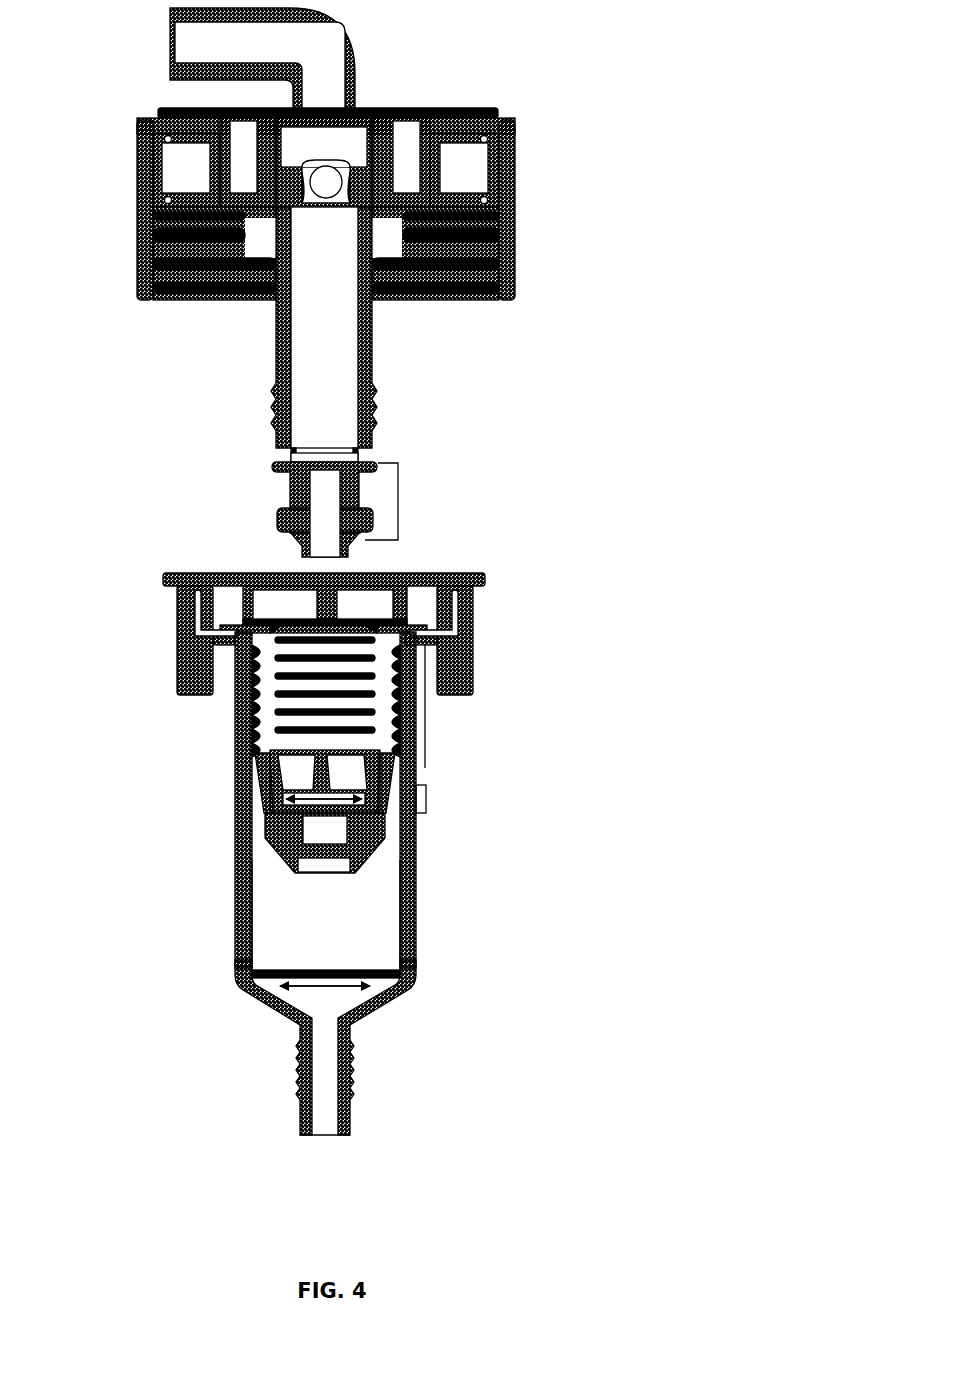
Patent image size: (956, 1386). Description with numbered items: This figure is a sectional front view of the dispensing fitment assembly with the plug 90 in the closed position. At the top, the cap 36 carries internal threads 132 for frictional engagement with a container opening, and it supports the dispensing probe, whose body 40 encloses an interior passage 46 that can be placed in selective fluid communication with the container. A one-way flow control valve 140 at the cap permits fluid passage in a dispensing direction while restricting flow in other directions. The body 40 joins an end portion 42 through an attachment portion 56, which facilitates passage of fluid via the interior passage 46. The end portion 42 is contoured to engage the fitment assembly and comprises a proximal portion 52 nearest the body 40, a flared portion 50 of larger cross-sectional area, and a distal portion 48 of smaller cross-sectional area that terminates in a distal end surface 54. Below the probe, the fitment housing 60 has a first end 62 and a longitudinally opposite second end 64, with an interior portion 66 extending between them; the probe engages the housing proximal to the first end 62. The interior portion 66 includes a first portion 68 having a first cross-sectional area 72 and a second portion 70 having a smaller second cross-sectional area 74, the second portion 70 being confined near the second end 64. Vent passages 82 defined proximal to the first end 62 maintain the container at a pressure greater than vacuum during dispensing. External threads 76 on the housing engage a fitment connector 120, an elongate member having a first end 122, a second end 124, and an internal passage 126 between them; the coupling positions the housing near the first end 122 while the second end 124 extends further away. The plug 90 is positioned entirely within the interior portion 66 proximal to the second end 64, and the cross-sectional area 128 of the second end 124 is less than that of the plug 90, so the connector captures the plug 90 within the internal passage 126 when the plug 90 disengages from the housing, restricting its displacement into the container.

The cap 36 is at (512, 157).
The flow control valve 140 is at (473, 112).
The internal threads 132 is at (457, 303).
The body 40 is at (378, 350).
The interior passage 46 is at (320, 410).
The attachment portion 56 is at (360, 455).
The end portion 42 is at (400, 496).
The proximal portion 52 is at (297, 487).
The flared portion 50 is at (285, 510).
The distal portion 48 is at (297, 537).
The distal end surface 54 is at (293, 548).
The fitment housing 60 is at (453, 573).
The first cross-sectional area 72 is at (350, 623).
The first end 122 is at (466, 610).
The vent passages 82 is at (220, 630).
The first end 62 is at (450, 593).
The fitment connector 120 is at (410, 853).
The internal passage 126 is at (368, 915).
The threads 76 is at (253, 675).
The interior portion 66 is at (280, 723).
The first portion 68 is at (425, 757).
The second portion 70 is at (426, 793).
The second end 64 is at (250, 808).
The second cross-sectional area 74 is at (307, 797).
The plug 90 is at (263, 823).
The cross-sectional area 128 is at (300, 985).
The second end 124 is at (410, 998).